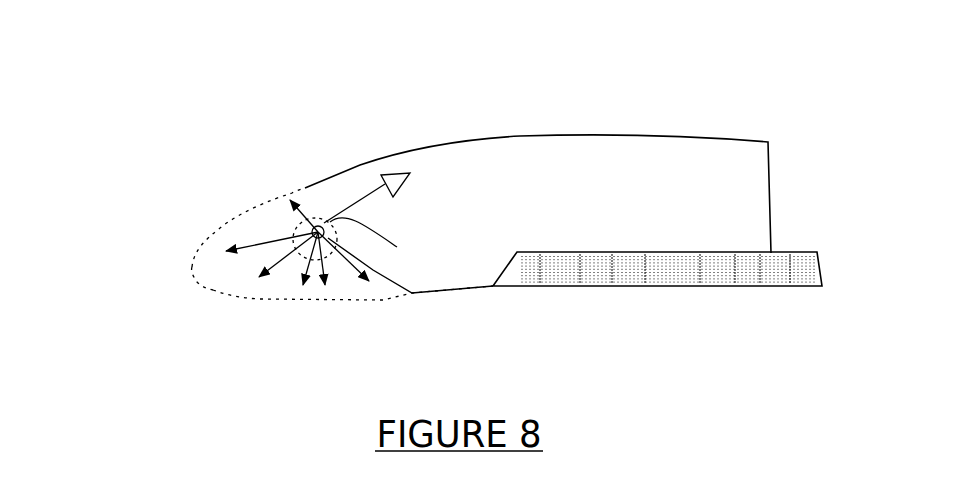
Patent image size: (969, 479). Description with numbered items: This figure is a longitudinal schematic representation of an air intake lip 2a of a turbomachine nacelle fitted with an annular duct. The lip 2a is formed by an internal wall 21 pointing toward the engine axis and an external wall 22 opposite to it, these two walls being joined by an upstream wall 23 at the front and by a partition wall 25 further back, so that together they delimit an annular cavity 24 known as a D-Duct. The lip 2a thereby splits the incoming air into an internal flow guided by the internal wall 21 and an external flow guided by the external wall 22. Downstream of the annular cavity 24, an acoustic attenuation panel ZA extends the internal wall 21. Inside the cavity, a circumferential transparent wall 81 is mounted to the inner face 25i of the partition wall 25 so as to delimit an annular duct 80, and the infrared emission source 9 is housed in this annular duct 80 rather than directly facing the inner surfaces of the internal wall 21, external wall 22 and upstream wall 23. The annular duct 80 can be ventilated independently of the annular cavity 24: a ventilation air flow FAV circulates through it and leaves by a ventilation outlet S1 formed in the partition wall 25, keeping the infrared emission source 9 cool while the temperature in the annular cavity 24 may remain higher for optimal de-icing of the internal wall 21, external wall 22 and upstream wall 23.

The lip 2a is at (283, 258).
The external wall 22 is at (232, 220).
The upstream wall 23 is at (192, 265).
The internal wall 21 is at (243, 300).
The annular cavity 24 is at (316, 297).
The partition wall 25 is at (403, 285).
The inner face 25i is at (388, 290).
The annular duct 80 is at (312, 213).
The circumferential transparent wall 81 is at (294, 226).
The infrared emission source 9 is at (376, 240).
The ventilation outlet S1 is at (325, 207).
The acoustic attenuation panel ZA is at (588, 287).
The ventilation air flow FAV is at (394, 193).